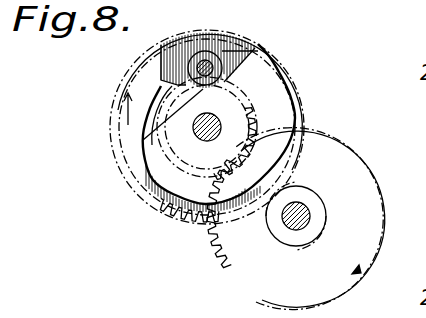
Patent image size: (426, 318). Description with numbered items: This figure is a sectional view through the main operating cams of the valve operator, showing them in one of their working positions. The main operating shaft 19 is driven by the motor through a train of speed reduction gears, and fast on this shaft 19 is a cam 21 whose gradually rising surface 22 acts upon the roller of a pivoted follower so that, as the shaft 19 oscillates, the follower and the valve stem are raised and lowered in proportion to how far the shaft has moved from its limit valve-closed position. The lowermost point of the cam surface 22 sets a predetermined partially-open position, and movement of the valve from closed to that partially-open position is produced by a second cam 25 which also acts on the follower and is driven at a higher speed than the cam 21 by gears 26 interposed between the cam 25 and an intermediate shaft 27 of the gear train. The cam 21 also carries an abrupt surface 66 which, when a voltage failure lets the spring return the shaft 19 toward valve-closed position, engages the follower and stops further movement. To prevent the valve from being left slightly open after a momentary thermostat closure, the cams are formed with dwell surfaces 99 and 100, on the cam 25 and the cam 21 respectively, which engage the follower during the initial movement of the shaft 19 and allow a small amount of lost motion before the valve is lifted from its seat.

The main operating shaft 19 is at (193, 132).
The cam 21 is at (263, 73).
The gradually rising surface 22 is at (150, 180).
The cam 25 is at (246, 113).
The gears 26 is at (263, 130).
The intermediate shaft 27 is at (289, 226).
The abrupt surface 66 is at (224, 60).
The dwell surface 99 is at (161, 78).
The dwell surface 100 is at (143, 140).